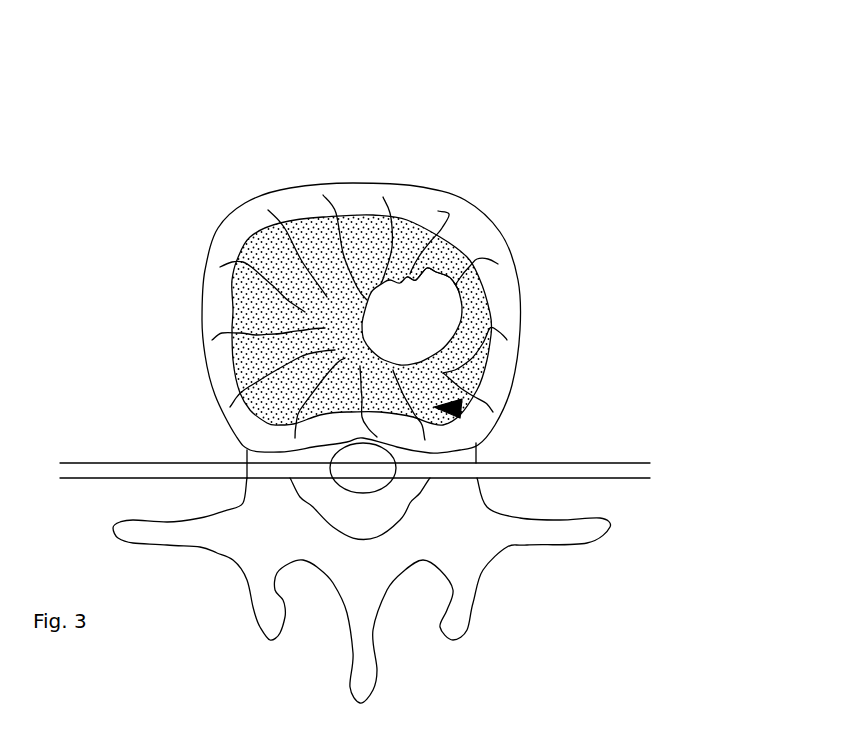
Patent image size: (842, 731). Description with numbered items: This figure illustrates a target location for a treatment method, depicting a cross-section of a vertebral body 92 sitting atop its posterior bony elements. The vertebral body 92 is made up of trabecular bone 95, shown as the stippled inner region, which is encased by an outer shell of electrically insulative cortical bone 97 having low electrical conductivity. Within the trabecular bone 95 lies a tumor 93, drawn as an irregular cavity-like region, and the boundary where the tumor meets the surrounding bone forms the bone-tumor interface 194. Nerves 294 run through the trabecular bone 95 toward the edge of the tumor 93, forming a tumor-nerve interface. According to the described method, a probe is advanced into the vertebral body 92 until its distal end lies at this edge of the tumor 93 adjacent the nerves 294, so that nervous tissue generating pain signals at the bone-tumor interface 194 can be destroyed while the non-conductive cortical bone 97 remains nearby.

The vertebral body 92 is at (462, 408).
The tumor 93 is at (435, 312).
The trabecular bone 95 is at (250, 313).
The cortical bone 97 is at (500, 358).
The bone-tumor interface 194 is at (436, 272).
The nerves 294 is at (440, 217).